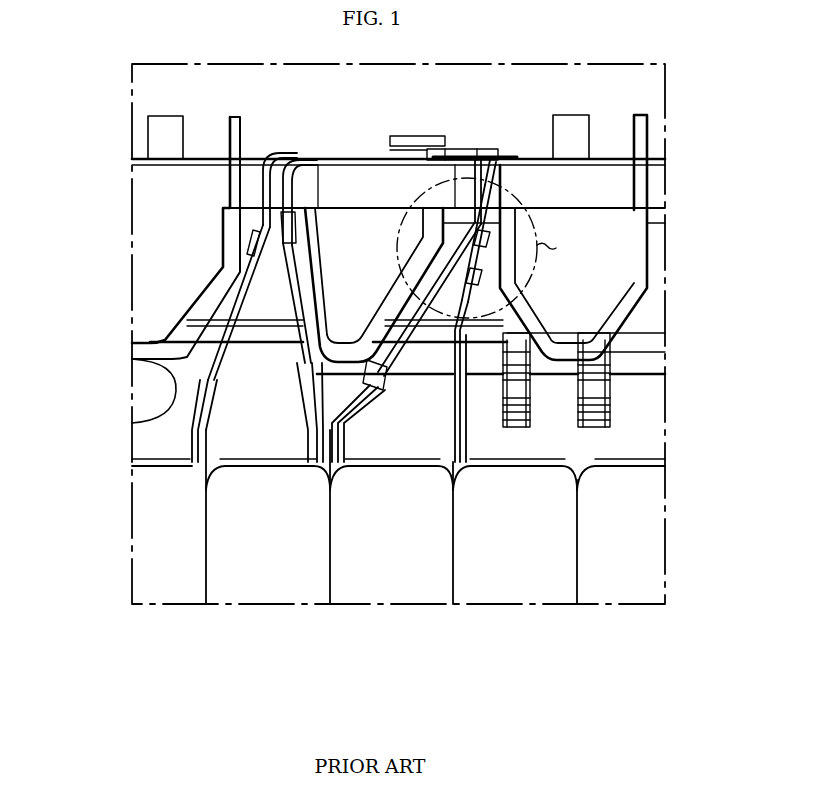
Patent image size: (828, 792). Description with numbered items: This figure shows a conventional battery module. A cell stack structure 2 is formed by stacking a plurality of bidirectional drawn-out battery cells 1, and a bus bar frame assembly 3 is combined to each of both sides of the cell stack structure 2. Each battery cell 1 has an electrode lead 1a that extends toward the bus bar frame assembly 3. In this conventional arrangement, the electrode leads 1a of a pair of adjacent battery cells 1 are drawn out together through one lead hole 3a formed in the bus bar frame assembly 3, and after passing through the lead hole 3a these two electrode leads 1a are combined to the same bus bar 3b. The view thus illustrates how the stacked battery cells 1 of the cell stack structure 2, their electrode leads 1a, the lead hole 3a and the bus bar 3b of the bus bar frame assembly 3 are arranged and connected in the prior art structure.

The bidirectional drawn-out battery cell 1 is at (553, 590).
The electrode lead 1a is at (284, 166).
The cell stack structure 2 is at (124, 530).
The bus bar frame assembly 3 is at (124, 227).
The lead hole 3a is at (311, 183).
The bus bar 3b is at (337, 174).